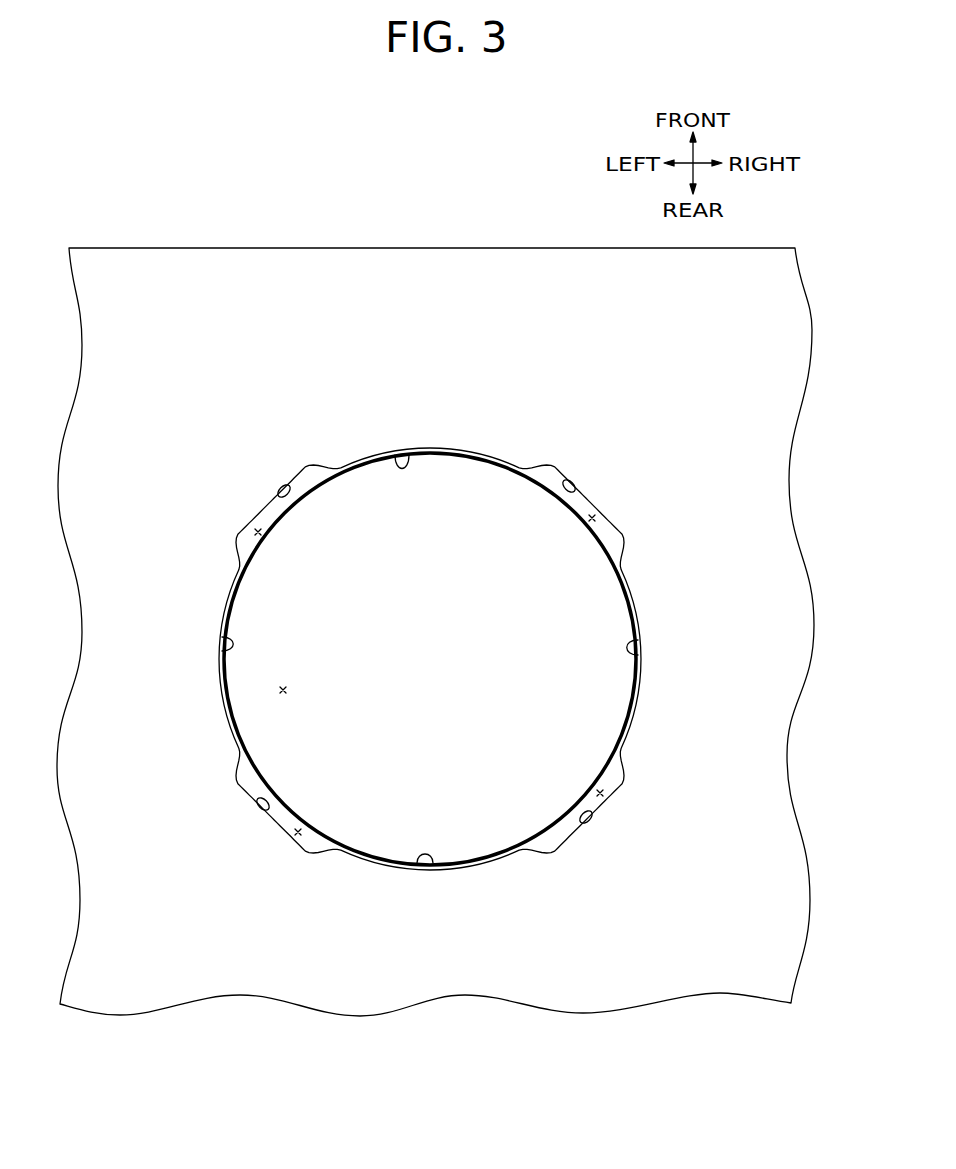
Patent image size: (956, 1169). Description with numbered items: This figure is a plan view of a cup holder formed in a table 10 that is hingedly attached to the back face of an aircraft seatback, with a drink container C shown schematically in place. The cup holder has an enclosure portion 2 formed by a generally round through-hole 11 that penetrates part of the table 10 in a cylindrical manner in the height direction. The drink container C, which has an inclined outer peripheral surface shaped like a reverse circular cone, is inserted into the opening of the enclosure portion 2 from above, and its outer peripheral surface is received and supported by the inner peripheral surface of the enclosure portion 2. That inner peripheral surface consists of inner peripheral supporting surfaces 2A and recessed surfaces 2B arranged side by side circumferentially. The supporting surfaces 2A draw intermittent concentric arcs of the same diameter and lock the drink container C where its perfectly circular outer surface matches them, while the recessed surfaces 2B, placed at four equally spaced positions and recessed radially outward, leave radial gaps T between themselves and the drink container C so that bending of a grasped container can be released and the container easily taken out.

The table 10 is at (248, 283).
The enclosure portion 2 is at (655, 573).
The drink container C is at (467, 452).
The inner peripheral supporting surfaces 2A is at (400, 452).
The recessed surfaces 2B is at (280, 490).
The gaps T is at (256, 531).
The through-hole 11 is at (281, 690).